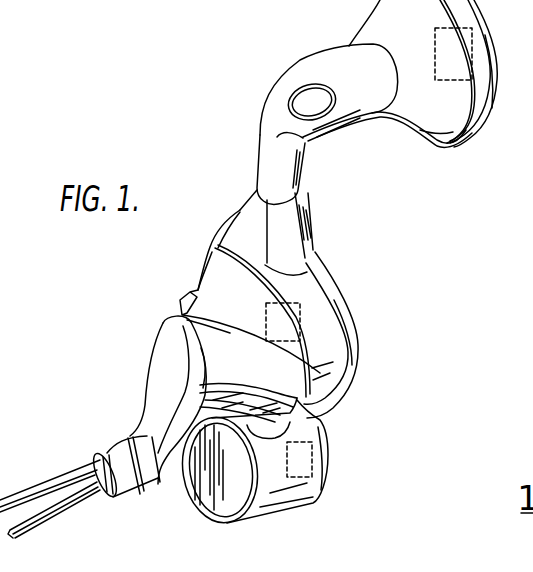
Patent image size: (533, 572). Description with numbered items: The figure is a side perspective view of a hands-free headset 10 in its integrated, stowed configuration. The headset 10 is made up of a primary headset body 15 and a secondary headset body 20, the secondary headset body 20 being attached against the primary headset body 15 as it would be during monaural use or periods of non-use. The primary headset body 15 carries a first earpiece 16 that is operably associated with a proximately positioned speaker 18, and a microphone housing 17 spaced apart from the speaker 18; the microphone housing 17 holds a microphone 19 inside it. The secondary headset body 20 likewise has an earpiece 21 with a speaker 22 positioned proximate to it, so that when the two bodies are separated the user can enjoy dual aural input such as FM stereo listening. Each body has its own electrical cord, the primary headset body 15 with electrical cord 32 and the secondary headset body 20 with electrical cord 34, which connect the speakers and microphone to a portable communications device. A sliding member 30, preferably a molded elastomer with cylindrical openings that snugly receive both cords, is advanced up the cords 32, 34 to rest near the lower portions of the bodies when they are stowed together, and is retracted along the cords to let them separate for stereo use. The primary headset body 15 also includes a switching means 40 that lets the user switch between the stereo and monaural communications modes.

The hands-free headset 10 is at (203, 102).
The primary headset body 15 is at (313, 232).
The first earpiece 16 is at (497, 82).
The microphone housing 17 is at (325, 472).
The speaker 18 is at (475, 70).
The microphone 19 is at (313, 452).
The secondary headset body 20 is at (155, 405).
The earpiece 21 is at (181, 314).
The speaker 22 is at (302, 322).
The sliding member 30 is at (131, 490).
The electrical cord 32 is at (37, 486).
The electrical cord 34 is at (60, 513).
The switching means 40 is at (318, 97).